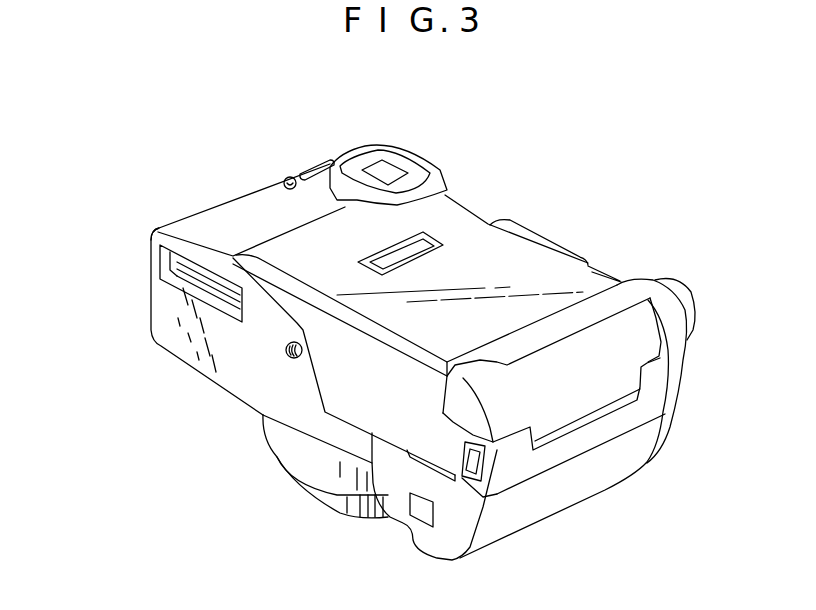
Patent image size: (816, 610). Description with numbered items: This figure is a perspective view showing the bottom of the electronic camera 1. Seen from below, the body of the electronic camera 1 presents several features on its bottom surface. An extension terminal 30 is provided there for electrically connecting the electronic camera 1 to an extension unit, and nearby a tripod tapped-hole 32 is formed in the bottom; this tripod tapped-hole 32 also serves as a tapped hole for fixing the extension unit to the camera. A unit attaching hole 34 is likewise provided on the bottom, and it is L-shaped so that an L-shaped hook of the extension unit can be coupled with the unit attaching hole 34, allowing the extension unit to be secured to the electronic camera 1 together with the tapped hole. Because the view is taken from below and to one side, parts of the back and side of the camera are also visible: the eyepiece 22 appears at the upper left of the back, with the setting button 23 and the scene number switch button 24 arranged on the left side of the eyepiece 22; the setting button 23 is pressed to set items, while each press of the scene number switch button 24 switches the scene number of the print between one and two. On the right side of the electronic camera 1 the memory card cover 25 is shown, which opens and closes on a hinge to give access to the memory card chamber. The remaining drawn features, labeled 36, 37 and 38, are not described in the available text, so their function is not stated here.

The electronic camera 1 is at (490, 198).
The eyepiece 22 is at (373, 160).
The setting button 23 is at (313, 170).
The scene number switch button 24 is at (285, 179).
The memory card cover 25 is at (643, 348).
The extension terminal 30 is at (177, 273).
The tripod tapped-hole 32 is at (285, 349).
The unit attaching hole 34 is at (477, 458).
The battery cover 36 is at (448, 550).
The slit 37 is at (418, 452).
The lock button 38 is at (423, 510).